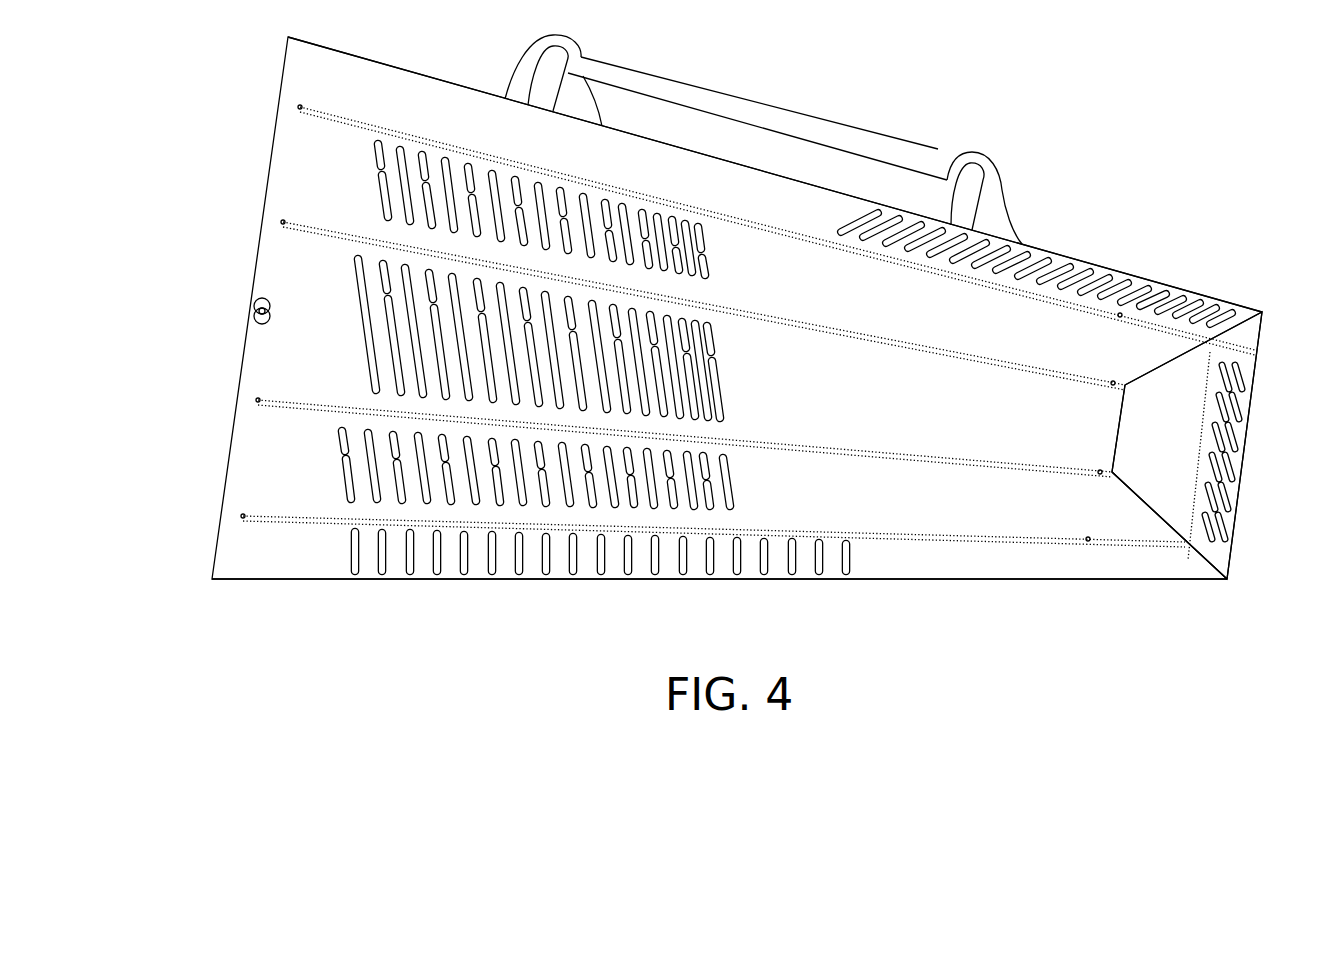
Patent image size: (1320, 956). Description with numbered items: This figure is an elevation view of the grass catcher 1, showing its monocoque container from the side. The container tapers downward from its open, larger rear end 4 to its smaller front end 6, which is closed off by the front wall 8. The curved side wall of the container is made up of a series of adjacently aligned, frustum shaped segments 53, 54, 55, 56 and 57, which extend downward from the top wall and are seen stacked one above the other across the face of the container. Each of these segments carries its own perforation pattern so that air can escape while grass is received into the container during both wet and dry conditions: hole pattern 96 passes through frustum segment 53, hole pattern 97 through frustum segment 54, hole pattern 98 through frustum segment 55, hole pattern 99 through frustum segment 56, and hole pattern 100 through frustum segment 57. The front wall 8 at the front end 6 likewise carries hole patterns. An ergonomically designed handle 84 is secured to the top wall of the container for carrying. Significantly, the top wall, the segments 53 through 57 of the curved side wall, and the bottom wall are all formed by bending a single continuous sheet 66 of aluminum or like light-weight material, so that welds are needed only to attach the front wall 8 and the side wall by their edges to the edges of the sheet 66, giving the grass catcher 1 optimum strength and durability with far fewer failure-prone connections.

The grass catcher 1 is at (1092, 183).
The rear end 4 is at (252, 318).
The front end 6 is at (1233, 523).
The front wall 8 is at (1236, 376).
The frustum shaped segment 53 is at (307, 78).
The frustum shaped segment 54 is at (292, 165).
The frustum shaped segment 55 is at (290, 270).
The frustum shaped segment 56 is at (248, 460).
The frustum shaped segment 57 is at (235, 555).
The continuous sheet 66 is at (961, 505).
The handle 84 is at (814, 120).
The hole pattern 96 is at (1150, 296).
The hole pattern 97 is at (657, 244).
The hole pattern 98 is at (663, 372).
The hole pattern 99 is at (677, 478).
The hole pattern 100 is at (825, 550).